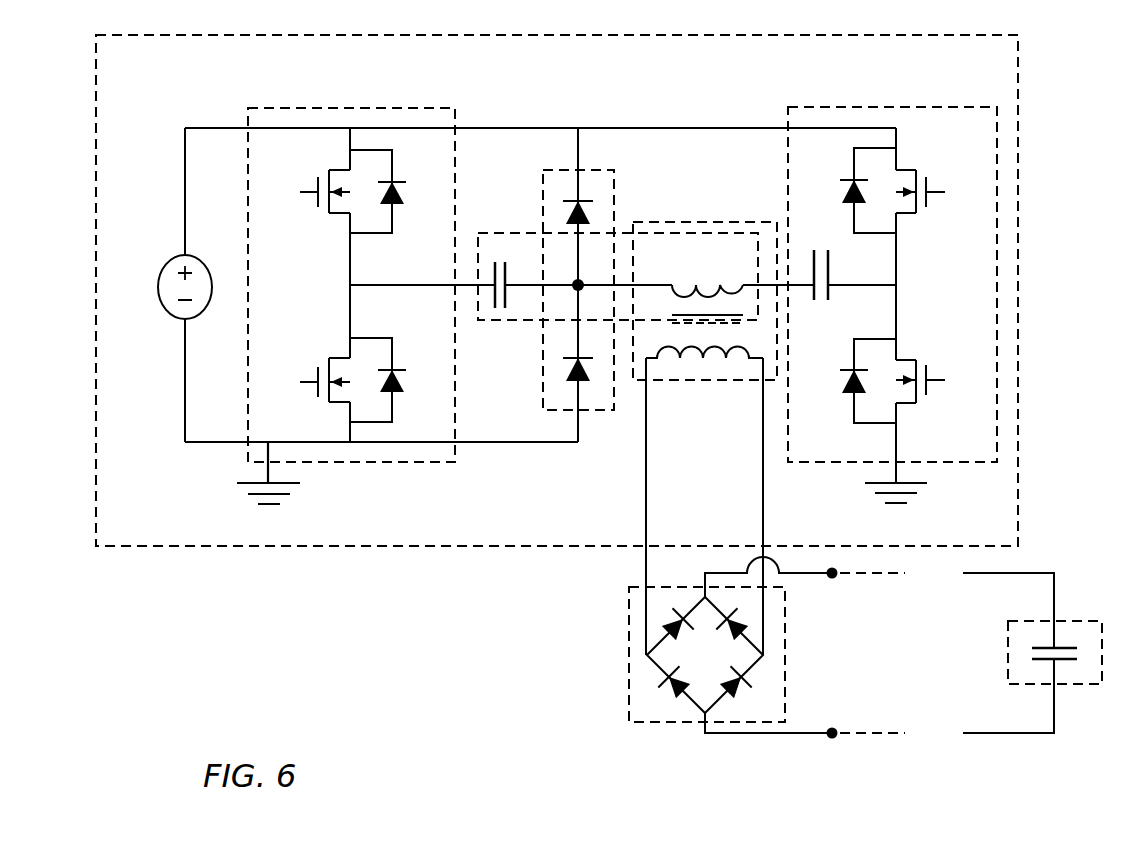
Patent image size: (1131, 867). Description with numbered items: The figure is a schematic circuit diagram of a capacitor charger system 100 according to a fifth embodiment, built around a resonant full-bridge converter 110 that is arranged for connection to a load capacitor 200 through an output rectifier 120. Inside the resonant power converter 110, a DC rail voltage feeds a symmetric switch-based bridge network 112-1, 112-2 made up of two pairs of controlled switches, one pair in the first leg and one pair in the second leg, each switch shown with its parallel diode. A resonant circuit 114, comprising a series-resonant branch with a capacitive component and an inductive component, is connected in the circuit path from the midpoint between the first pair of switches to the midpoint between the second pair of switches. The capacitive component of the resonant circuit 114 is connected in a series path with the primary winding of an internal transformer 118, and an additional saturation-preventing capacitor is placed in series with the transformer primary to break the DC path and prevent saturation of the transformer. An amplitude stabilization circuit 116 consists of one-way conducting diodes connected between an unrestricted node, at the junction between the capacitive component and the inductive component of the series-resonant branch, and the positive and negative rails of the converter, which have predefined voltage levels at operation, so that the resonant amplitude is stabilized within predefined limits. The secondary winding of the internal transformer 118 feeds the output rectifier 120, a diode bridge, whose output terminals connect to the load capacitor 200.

The capacitor charger system 100 is at (410, 655).
The resonant full-bridge converter 110 is at (1018, 84).
The switch-based bridge network (first half) 112-1 is at (338, 108).
The switch-based bridge network (second half) 112-2 is at (886, 107).
The resonant circuit 114 is at (496, 232).
The amplitude stabilization circuit 116 is at (614, 177).
The internal transformer 118 is at (708, 222).
The output rectifier 120 is at (785, 648).
The load capacitor 200 is at (1082, 621).